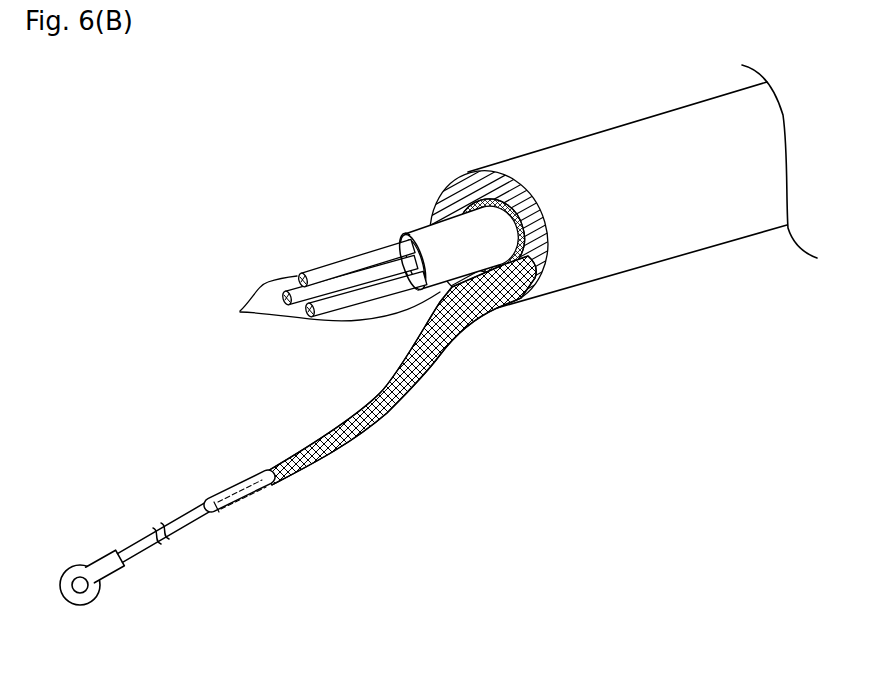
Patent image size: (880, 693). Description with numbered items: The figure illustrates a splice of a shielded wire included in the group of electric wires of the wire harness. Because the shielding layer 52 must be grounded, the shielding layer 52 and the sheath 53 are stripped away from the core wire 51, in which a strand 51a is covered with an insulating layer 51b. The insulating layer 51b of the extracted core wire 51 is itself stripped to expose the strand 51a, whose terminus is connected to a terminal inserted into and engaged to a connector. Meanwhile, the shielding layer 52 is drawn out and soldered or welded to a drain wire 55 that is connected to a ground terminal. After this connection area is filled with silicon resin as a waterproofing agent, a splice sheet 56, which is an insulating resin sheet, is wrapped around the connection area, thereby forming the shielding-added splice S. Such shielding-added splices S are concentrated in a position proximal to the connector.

The core wire 51 is at (316, 310).
The strand 51a is at (319, 280).
The insulating layer 51b is at (340, 322).
The shielding layer 52 is at (443, 360).
The sheath 53 is at (485, 178).
The drain wire 55 is at (197, 522).
The splice sheet 56 is at (270, 482).
The shielding-added splice S is at (246, 506).